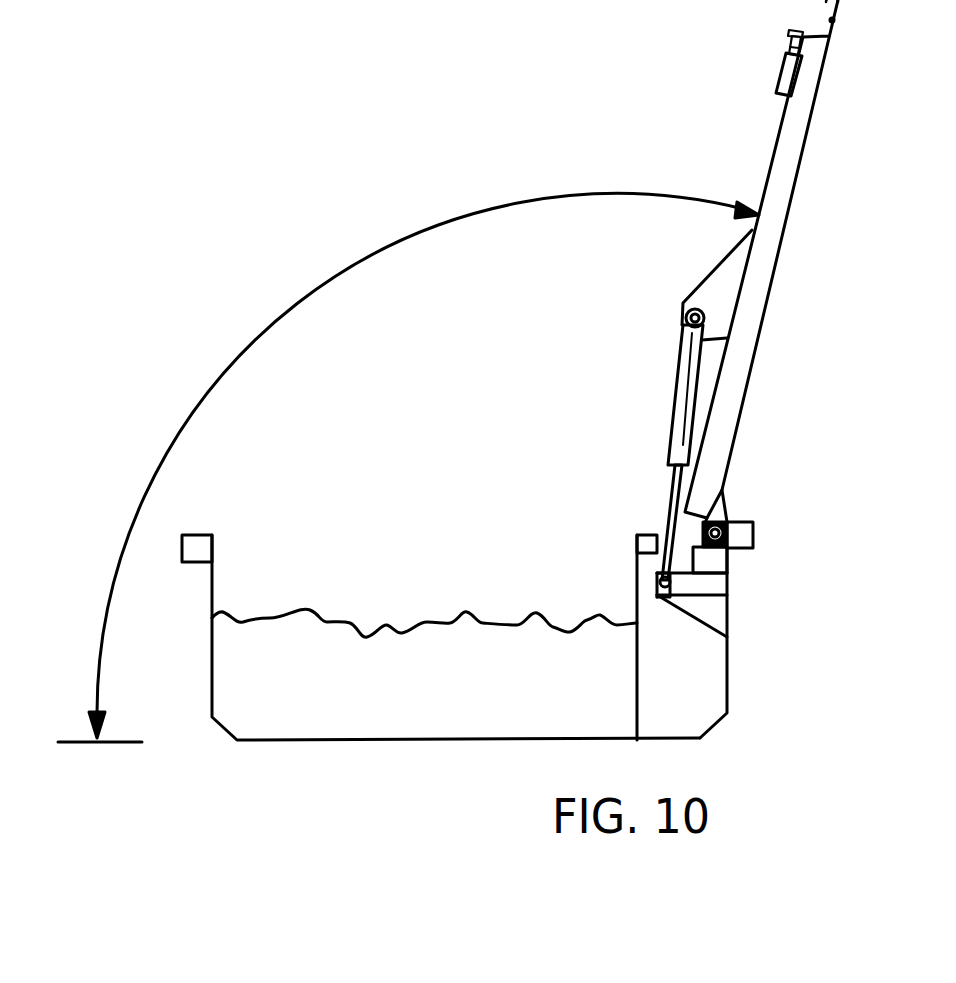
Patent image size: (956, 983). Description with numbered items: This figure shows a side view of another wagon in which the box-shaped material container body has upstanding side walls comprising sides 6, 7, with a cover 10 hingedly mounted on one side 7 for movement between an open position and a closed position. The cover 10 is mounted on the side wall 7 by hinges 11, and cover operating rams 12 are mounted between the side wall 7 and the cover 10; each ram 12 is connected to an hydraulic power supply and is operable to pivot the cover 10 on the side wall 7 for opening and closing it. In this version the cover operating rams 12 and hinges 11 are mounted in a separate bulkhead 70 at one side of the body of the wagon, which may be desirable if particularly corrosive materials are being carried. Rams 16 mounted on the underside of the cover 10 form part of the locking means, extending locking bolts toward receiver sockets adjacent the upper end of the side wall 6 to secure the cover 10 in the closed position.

The side 6 is at (205, 632).
The side 7 is at (728, 677).
The cover 10 is at (760, 267).
The hinges 11 is at (728, 510).
The rams 12 is at (665, 393).
The rams 16 is at (772, 68).
The bulkhead 70 is at (690, 652).